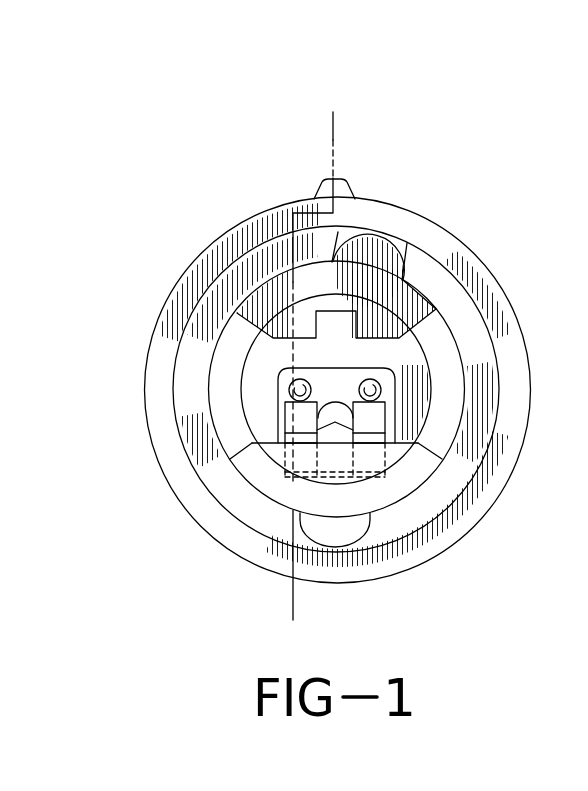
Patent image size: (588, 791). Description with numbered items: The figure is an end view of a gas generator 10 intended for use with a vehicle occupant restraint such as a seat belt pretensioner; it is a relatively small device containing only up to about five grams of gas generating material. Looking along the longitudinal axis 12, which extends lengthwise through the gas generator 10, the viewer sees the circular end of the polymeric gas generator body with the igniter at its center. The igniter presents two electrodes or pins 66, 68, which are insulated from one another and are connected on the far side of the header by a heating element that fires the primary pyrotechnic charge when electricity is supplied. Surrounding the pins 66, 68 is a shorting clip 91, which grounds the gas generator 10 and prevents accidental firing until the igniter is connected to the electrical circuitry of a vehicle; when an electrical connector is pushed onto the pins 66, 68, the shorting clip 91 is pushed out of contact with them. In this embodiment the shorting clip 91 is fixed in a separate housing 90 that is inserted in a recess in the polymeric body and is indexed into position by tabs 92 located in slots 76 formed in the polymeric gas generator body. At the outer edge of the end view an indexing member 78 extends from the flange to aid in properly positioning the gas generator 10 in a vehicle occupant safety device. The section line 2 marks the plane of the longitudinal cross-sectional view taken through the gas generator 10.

The section line 2— 2 is at (333, 112).
The gas generator 10 is at (189, 176).
The longitudinal axis 12 is at (380, 389).
The pin 66 is at (374, 384).
The pin 68 is at (296, 386).
The slot 76 is at (410, 243).
The indexing member 78 is at (348, 184).
The housing 90 is at (264, 483).
The shorting clip 91 is at (373, 420).
The tab 92 is at (374, 247).